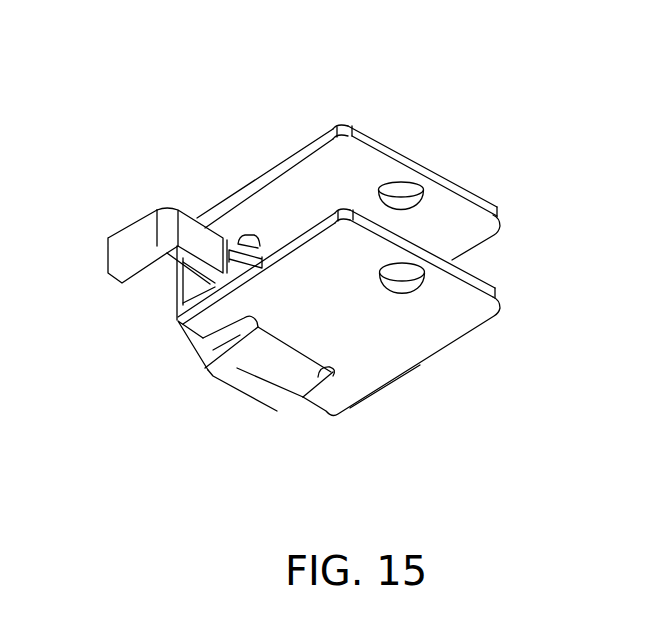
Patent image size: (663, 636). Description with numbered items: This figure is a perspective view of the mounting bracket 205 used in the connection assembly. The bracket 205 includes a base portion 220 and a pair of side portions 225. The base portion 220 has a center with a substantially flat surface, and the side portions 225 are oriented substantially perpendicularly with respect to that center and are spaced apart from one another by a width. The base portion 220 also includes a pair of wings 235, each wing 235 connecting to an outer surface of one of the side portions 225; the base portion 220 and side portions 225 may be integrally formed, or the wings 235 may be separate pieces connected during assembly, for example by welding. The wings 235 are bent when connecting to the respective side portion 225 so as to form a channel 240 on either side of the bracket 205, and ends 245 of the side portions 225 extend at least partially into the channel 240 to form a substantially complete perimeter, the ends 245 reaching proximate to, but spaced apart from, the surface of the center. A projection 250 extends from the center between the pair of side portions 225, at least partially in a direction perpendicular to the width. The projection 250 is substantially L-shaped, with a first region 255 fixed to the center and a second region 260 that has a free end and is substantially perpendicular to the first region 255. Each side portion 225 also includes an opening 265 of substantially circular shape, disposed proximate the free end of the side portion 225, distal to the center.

The bracket 205 is at (119, 48).
The side portions 225 is at (352, 126).
The opening 265 is at (403, 187).
The projection 250 is at (151, 198).
The first region 255 is at (197, 233).
The second region 260 is at (115, 250).
The base portion 220 is at (190, 283).
The channel 240 is at (210, 357).
The wings 235 is at (265, 402).
The ends 245 is at (355, 400).